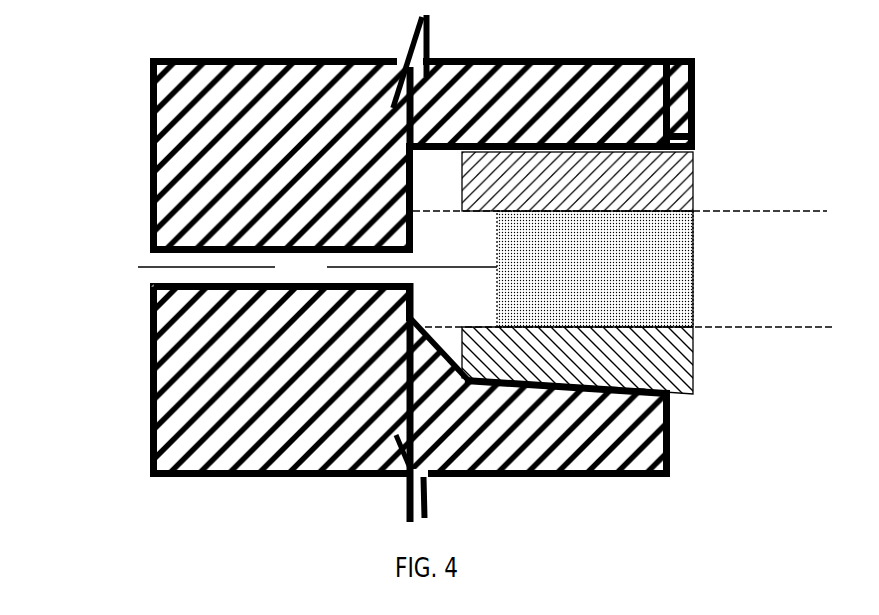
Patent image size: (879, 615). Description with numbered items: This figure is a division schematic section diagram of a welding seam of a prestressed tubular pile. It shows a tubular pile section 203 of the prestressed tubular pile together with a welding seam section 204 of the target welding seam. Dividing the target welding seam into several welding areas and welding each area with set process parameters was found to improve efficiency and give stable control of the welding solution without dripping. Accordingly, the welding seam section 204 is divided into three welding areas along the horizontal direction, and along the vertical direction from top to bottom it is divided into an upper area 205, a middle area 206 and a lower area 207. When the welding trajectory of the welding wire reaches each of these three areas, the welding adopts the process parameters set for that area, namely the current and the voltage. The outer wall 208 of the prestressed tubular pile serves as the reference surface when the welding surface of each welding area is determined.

The tubular pile section 203 is at (158, 122).
The welding seam section 204 is at (445, 262).
The upper area 205 is at (693, 160).
The middle area 206 is at (693, 272).
The lower area 207 is at (693, 360).
The outer wall 208 is at (693, 226).